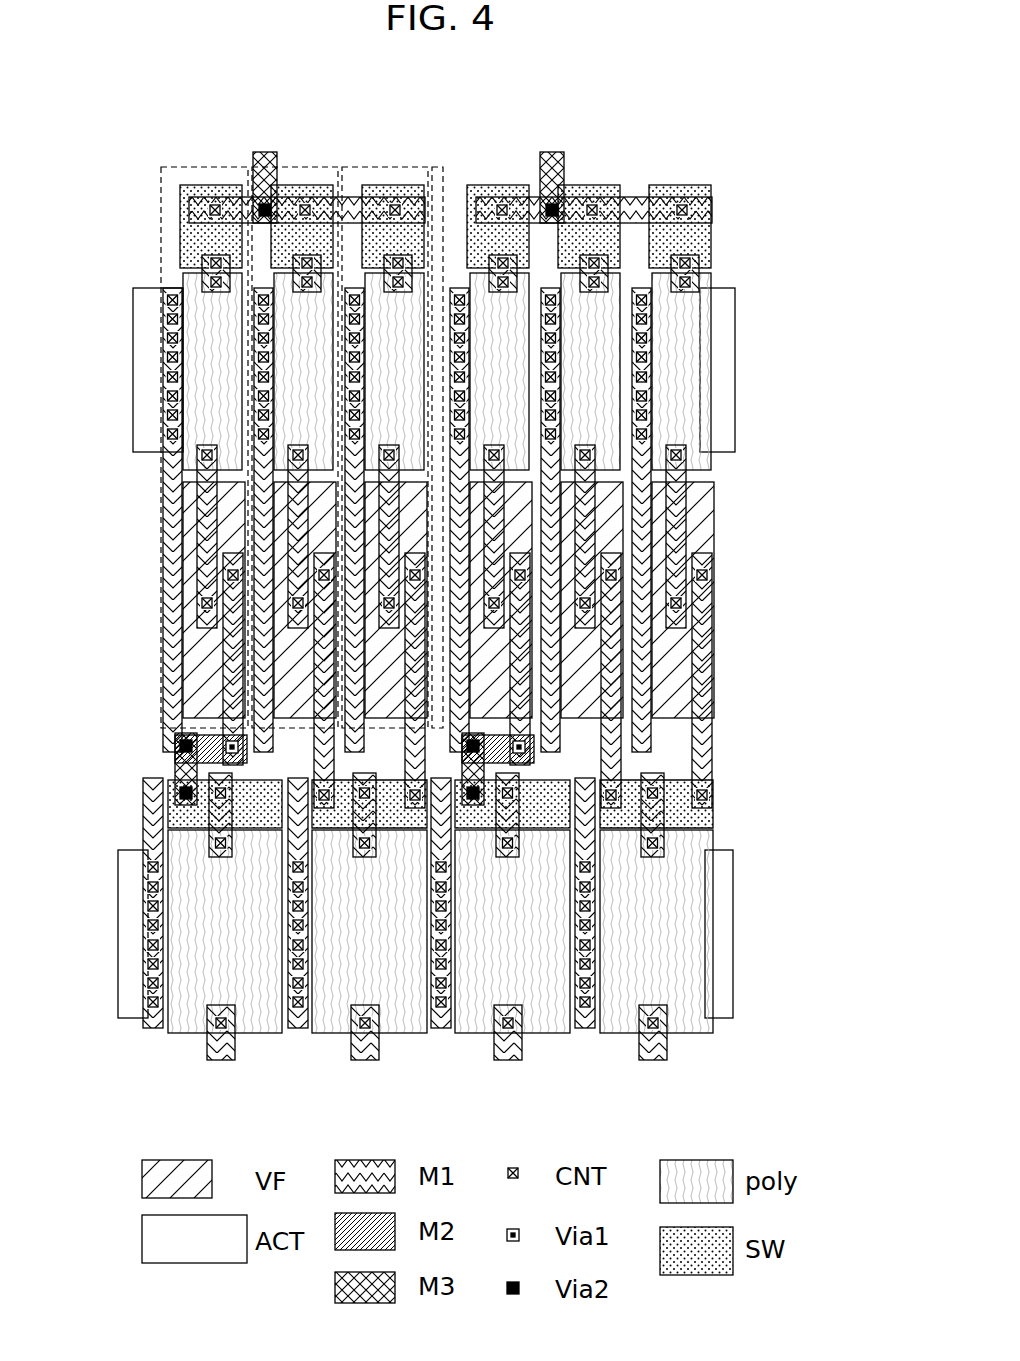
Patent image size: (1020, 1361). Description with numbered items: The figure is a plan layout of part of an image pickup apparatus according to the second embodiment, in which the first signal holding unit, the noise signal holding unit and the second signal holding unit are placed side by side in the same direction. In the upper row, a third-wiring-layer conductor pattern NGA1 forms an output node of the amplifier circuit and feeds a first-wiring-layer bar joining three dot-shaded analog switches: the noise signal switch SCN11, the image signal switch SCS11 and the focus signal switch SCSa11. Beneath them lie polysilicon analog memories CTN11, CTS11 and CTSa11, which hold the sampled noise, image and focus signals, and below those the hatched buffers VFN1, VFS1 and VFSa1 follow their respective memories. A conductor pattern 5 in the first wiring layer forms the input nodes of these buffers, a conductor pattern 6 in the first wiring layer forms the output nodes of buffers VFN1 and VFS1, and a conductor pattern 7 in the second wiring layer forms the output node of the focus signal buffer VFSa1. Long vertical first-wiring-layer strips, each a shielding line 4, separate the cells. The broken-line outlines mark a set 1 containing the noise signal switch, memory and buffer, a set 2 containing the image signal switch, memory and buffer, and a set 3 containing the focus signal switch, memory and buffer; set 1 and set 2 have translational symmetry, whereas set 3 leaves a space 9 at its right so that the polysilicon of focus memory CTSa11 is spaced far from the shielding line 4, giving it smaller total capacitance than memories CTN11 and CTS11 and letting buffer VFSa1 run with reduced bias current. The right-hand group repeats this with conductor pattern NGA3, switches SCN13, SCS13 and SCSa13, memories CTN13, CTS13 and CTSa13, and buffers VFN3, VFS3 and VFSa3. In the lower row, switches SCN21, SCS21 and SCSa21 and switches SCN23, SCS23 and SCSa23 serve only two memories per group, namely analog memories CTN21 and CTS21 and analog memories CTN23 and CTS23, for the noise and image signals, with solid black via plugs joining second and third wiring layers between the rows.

The set 1 is at (170, 167).
The set 2 is at (284, 167).
The set 3 is at (350, 167).
The space 9 is at (438, 167).
The shielding line 4 is at (160, 495).
The conductor pattern 5 is at (390, 520).
The conductor pattern 6 is at (407, 582).
The conductor pattern 7 is at (387, 603).
The noise signal switch SCN11 is at (207, 243).
The image signal switch SCS11 is at (316, 243).
The focus signal switch SCSa11 is at (392, 243).
The conductor pattern NGA1 is at (265, 150).
The noise signal switch SCN13 is at (490, 243).
The image signal switch SCS13 is at (605, 243).
The focus signal switch SCSa13 is at (677, 243).
The conductor pattern NGA3 is at (548, 150).
The analog memory CTN11 is at (202, 313).
The analog memory CTS11 is at (293, 363).
The focus signal analog memory CTSa11 is at (378, 407).
The analog memory CTN13 is at (500, 313).
The analog memory CTS13 is at (590, 362).
The focus signal analog memory CTSa13 is at (680, 406).
The buffer VFN1 is at (208, 632).
The buffer VFS1 is at (293, 673).
The focus signal buffer VFSa1 is at (388, 708).
The buffer VFN3 is at (500, 647).
The buffer VFS3 is at (587, 670).
The focus signal buffer VFSa3 is at (680, 710).
The noise signal switch SCN21 is at (192, 813).
The image signal switch SCS21 is at (338, 813).
The focus signal switch SCSa21 is at (407, 813).
The noise signal switch SCN23 is at (480, 815).
The image signal switch SCS23 is at (622, 815).
The focus signal switch SCSa23 is at (700, 815).
The analog memory CTN21 is at (225, 931).
The analog memory CTS21 is at (369, 931).
The analog memory CTN23 is at (512, 931).
The analog memory CTS23 is at (656, 931).